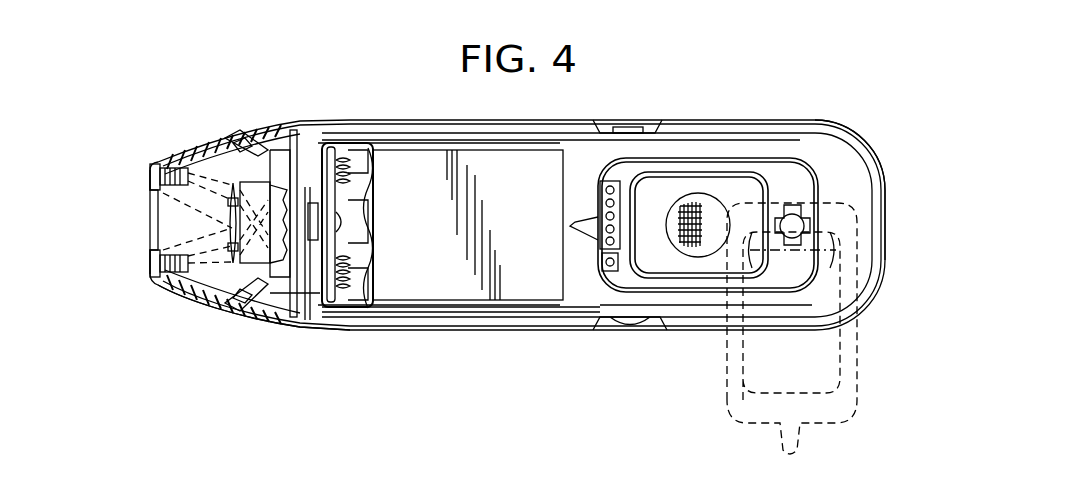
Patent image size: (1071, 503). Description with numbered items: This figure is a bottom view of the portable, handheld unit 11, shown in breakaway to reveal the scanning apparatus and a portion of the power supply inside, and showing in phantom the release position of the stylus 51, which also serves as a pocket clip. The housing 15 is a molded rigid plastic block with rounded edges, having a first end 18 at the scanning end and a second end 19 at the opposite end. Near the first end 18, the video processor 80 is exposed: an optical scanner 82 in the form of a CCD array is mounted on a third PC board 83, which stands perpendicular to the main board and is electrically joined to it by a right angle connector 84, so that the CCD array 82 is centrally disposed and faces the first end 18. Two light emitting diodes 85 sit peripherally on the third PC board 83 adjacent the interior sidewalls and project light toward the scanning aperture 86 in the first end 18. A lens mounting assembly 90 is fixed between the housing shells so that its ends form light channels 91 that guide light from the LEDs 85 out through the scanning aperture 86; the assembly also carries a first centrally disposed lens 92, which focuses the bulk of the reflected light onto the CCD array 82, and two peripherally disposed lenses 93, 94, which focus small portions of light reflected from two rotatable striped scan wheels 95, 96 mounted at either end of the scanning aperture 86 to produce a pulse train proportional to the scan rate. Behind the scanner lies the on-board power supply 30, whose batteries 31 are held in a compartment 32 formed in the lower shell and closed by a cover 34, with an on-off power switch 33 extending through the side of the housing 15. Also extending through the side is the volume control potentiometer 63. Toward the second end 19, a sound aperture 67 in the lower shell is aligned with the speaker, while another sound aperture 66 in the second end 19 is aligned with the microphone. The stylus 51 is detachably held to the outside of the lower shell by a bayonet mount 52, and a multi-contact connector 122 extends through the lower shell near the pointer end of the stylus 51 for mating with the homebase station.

The portable unit 11 is at (521, 342).
The housing 15 is at (436, 336).
The first end 18 is at (150, 166).
The second end 19 is at (879, 176).
The on-board power supply 30 is at (385, 142).
The batteries 31 is at (357, 257).
The compartment 32 is at (356, 310).
The on-off power switch 33 is at (633, 128).
The cover 34 is at (485, 162).
The stylus 51 is at (733, 158).
The bayonet mount 52 is at (796, 206).
The volume control potentiometer 63 is at (630, 326).
The sound aperture 66 is at (883, 218).
The sound aperture 67 is at (705, 205).
The video processor 80 is at (312, 242).
The optical scanner 82 is at (268, 182).
The third PC board 83 is at (290, 150).
The right angle connector 84 is at (297, 140).
The light emitting diodes 85 is at (238, 145).
The scanning aperture 86 is at (165, 232).
The lens mounting assembly 90 is at (290, 295).
The light channels 91 is at (225, 140).
The first centrally disposed lens 92 is at (227, 248).
The peripherally disposed lens 93 is at (195, 147).
The peripherally disposed lens 94 is at (233, 280).
The scan wheel 95 is at (153, 182).
The scan wheel 96 is at (158, 268).
The connector 122 is at (607, 271).